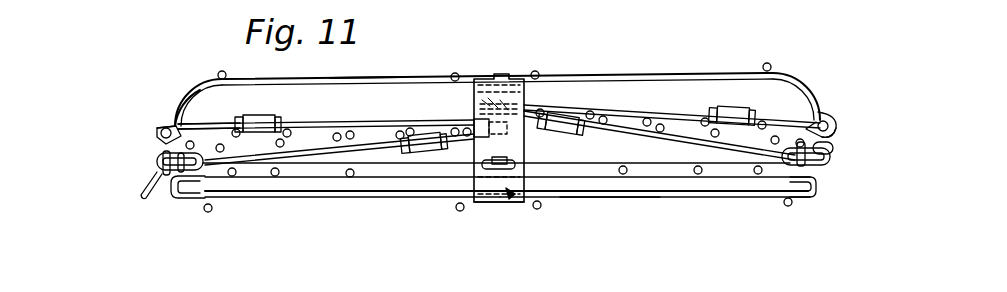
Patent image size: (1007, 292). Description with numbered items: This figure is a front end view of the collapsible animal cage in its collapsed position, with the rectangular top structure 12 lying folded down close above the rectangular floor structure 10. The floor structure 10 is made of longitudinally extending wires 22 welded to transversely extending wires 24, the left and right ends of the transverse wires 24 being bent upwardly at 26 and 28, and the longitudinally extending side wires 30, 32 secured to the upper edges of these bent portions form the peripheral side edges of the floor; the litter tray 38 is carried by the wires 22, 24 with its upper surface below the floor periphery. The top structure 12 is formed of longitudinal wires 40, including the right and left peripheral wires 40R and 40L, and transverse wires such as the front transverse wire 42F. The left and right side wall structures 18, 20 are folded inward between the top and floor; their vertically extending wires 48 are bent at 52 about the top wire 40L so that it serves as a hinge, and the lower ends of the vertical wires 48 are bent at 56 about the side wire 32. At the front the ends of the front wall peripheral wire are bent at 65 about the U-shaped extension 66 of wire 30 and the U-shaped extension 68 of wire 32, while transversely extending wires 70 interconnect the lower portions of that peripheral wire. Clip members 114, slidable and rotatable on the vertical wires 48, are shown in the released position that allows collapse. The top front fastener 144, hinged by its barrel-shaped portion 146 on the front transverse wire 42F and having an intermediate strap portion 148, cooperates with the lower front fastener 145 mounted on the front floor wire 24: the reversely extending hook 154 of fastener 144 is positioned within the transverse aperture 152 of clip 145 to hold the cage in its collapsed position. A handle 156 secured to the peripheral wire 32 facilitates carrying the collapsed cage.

The floor structure 10 is at (646, 213).
The top structure 12 is at (419, 72).
The left hand side wall structure 18 is at (118, 139).
The right hand side wall structure 20 is at (848, 140).
The longitudinally extending wires 22 is at (211, 211).
The transversely extending wires 24 is at (730, 198).
The upwardly bent left ends 26 is at (167, 190).
The upwardly bent right ends 28 is at (823, 178).
The longitudinally extending side wire 30 is at (157, 153).
The longitudinally extending side wire 32 is at (832, 150).
The litter tray 38 is at (328, 192).
The longitudinally extending wires 40 is at (537, 70).
The left longitudinal top wire 40L is at (160, 126).
The right longitudinal top wire 40R is at (831, 118).
The front transverse top wire 42F is at (360, 78).
The vertically extending wires 48 is at (378, 122).
The bend 52 is at (167, 126).
The bend 56 is at (157, 165).
The bent ends of peripheral wire 65 is at (196, 130).
The U-shaped extension 66 is at (191, 190).
The U-shaped extension 68 is at (776, 170).
The transversely extending wires 70 is at (642, 160).
The clip members 114 is at (262, 115).
The top front fastener 144 is at (501, 77).
The lower front fastener 145 is at (510, 196).
The barrel-shaped portion 146 is at (498, 204).
The intermediate strap portion 148 is at (477, 98).
The transverse aperture 152 is at (477, 152).
The reversely extending hook 154 is at (515, 160).
The handle 156 is at (141, 192).